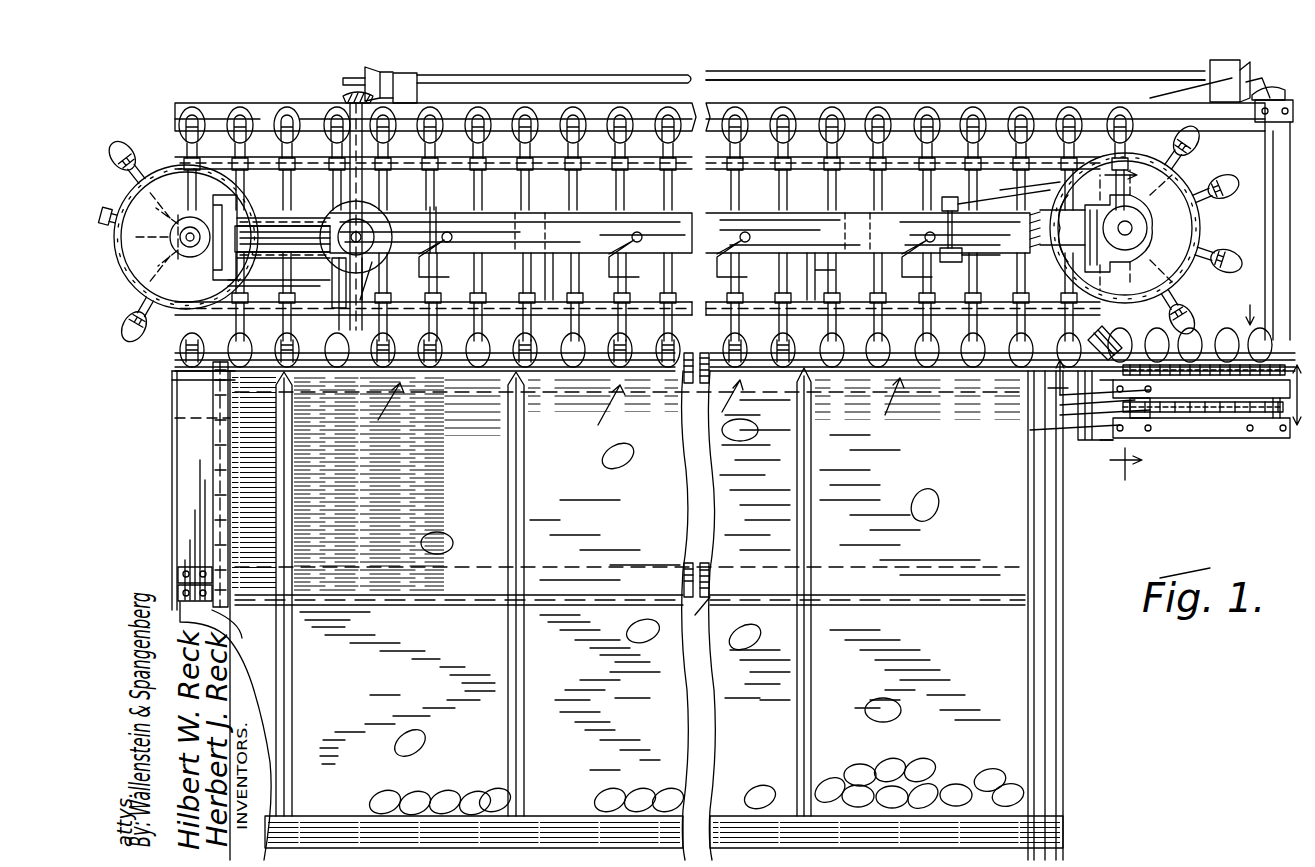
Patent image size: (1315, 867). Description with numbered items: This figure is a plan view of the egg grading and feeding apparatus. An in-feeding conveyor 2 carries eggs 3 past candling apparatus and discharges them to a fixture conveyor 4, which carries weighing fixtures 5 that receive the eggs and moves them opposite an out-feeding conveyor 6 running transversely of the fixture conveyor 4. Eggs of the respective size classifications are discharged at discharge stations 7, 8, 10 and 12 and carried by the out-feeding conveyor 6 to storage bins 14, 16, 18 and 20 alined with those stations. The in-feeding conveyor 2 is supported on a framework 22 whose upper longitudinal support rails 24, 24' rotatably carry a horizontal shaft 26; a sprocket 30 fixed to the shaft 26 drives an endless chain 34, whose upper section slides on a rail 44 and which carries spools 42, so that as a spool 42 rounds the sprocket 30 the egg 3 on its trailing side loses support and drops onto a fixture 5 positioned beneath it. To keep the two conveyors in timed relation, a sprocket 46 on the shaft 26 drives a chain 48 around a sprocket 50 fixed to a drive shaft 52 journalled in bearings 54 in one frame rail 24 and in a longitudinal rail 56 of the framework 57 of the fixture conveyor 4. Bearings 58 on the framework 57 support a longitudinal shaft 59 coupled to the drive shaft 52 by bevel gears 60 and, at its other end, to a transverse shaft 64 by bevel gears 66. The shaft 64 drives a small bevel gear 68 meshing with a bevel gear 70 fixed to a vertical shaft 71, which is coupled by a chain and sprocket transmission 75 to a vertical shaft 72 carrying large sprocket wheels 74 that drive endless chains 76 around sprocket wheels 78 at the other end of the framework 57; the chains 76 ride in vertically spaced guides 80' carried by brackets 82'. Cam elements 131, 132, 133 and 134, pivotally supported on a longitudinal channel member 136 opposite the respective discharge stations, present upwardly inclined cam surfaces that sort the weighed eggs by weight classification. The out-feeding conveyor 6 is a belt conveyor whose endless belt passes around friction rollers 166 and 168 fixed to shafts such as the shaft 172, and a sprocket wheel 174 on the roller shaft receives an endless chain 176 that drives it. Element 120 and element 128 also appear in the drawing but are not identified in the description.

The in-feeding conveyor 2 is at (1250, 302).
The eggs 3 is at (924, 508).
The fixture conveyor 4 is at (1257, 193).
The weighing fixtures 5 is at (630, 290).
The out-feeding conveyor 6 is at (862, 486).
The discharge station 7 is at (1085, 406).
The discharge station 8 is at (927, 320).
The discharge station 10 is at (588, 432).
The discharge station 12 is at (366, 420).
The storage bin 14 is at (946, 683).
The storage bin 16 is at (742, 686).
The storage bin 18 is at (632, 686).
The storage bin 20 is at (385, 683).
The framework 22 is at (1240, 440).
The upper longitudinal support rail 24 is at (1095, 444).
The support post 24' is at (1063, 410).
The horizontal shaft 26 is at (1108, 412).
The sprocket 30 is at (1072, 402).
The endless chain 34 is at (1160, 430).
The spool 42 is at (1236, 328).
The rail 44 is at (1205, 413).
The sprocket 46 is at (1130, 425).
The chain 48 is at (1190, 400).
The sprocket 50 is at (1219, 448).
The drive shaft 52 is at (1245, 200).
The bearings 54 is at (1190, 170).
The longitudinal rail 56 is at (1187, 83).
The framework 57 is at (232, 95).
The bearings 58 is at (420, 76).
The longitudinal shaft 59 is at (1070, 78).
The bevel gears 60 is at (1260, 94).
The transverse shaft 64 is at (372, 150).
The bevel gears 66 is at (348, 86).
The small bevel gear 68 is at (329, 294).
The bevel gear 70 is at (430, 203).
The shaft 71 is at (388, 279).
The vertical shaft 72 is at (175, 224).
The large chain sprocket wheels 74 is at (175, 170).
The chain and sprocket transmission 75 is at (368, 218).
The endless chains 76 is at (320, 170).
The sprocket wheels 78 is at (1040, 184).
The guide 80' is at (705, 291).
The bracket 82' is at (680, 276).
The rail end 120 is at (180, 378).
The switch block 128 is at (945, 215).
The cam element 131 is at (910, 238).
The cam element 132 is at (725, 235).
The cam element 133 is at (613, 242).
The cam element 134 is at (426, 242).
The longitudinal channel member 136 is at (530, 222).
The friction roller 166 is at (700, 378).
The friction roller 168 is at (695, 614).
The shaft 172 is at (175, 580).
The sprocket wheel 174 is at (228, 731).
The endless chain 176 is at (210, 482).